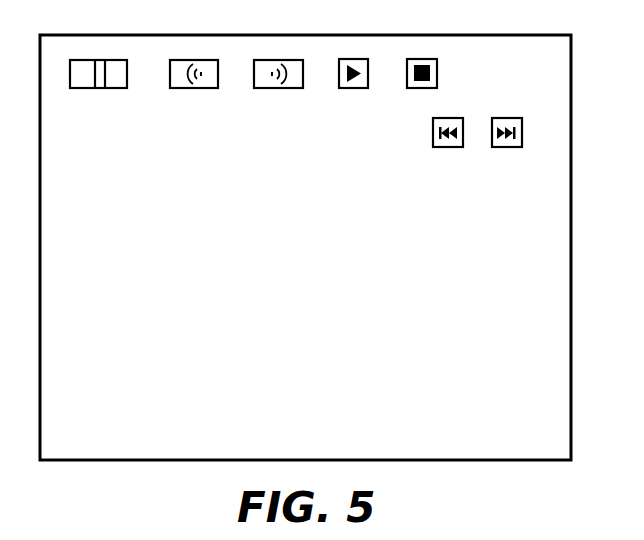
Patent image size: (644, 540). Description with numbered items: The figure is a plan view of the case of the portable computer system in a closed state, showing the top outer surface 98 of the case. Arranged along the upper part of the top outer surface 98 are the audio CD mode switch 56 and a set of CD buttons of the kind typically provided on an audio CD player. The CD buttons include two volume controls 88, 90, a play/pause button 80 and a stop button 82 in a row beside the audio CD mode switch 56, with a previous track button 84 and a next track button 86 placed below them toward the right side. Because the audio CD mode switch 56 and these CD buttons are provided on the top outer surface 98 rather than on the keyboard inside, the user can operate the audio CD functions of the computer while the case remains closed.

The top outer surface 98 is at (571, 232).
The audio CD mode switch 56 is at (117, 62).
The volume control 88 is at (202, 62).
The volume control 90 is at (292, 62).
The play/pause button 80 is at (355, 61).
The stop button 82 is at (422, 61).
The previous track button 84 is at (448, 147).
The next track button 86 is at (507, 147).